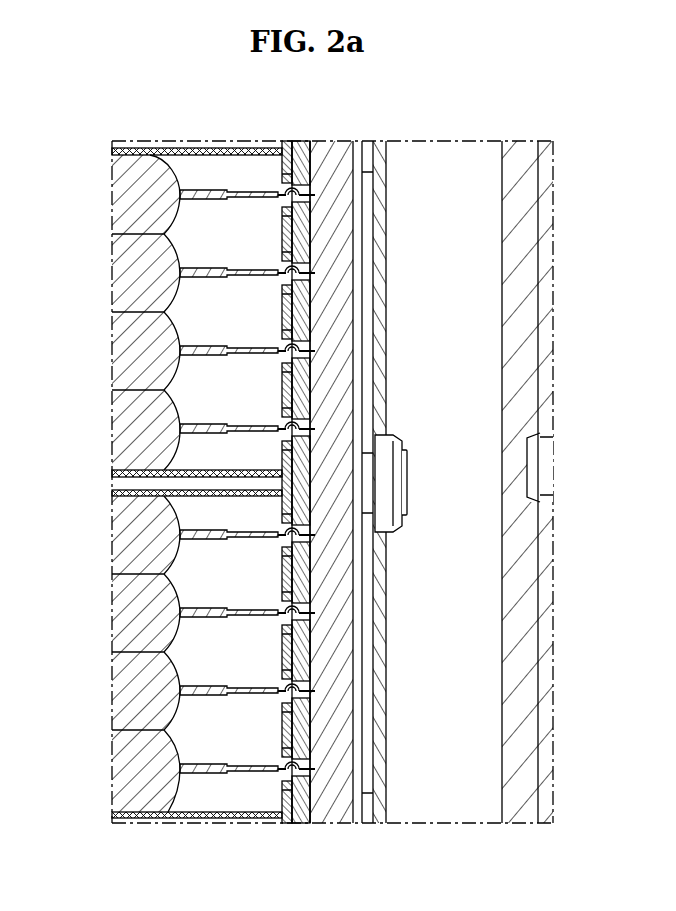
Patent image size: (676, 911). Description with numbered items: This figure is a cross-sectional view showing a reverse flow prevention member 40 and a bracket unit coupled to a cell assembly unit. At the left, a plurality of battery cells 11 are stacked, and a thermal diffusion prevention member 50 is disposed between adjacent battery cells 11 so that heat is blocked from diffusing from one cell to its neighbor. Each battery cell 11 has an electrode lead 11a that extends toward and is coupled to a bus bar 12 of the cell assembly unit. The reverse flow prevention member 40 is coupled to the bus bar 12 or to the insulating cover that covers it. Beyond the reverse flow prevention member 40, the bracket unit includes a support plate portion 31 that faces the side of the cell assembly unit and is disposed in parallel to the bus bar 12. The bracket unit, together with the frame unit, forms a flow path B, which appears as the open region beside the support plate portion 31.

The battery cell 11 is at (133, 802).
The electrode lead 11a is at (204, 778).
The bus bar 12 is at (300, 792).
The reverse flow prevention member 40 is at (338, 810).
The support plate portion 31 is at (367, 813).
The flow path B is at (468, 805).
The thermal diffusion prevention member 50 is at (168, 497).